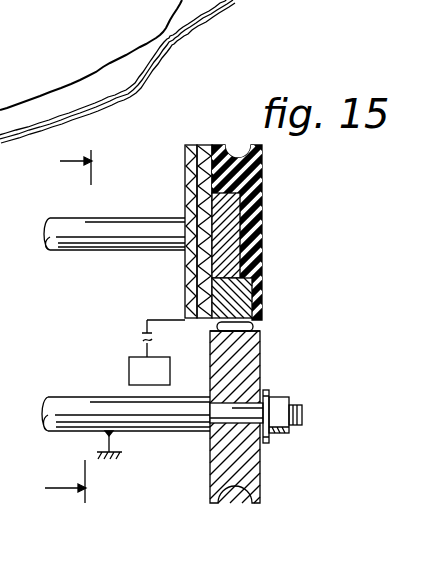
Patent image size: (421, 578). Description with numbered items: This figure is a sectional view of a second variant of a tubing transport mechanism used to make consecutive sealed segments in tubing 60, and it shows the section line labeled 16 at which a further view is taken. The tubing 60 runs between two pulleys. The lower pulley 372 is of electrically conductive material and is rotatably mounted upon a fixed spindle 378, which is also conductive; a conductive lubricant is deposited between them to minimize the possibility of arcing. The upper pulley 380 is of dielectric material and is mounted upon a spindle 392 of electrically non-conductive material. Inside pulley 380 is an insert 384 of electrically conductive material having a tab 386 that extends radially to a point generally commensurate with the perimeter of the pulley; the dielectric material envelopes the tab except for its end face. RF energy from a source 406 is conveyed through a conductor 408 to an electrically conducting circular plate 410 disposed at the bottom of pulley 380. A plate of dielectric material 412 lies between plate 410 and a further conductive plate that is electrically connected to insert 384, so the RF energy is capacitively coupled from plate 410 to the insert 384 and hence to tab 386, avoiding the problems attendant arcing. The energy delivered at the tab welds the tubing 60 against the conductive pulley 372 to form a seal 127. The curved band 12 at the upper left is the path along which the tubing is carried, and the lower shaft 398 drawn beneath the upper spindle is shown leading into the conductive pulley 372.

The track band 12 is at (32, 101).
The section line 16 is at (59, 326).
The tubing 60 is at (255, 342).
The seal 127 is at (258, 315).
The pulley 372 is at (282, 416).
The spindle 378 is at (236, 428).
The pulley 380 is at (262, 215).
The insert 384 is at (262, 172).
The tab 386 is at (258, 292).
The spindle 392 is at (130, 218).
The lower shaft 398 is at (126, 428).
The source 406 is at (129, 358).
The conductor 408 is at (147, 320).
The circular plate 410 is at (185, 145).
The plate of dielectric material 412 is at (199, 145).